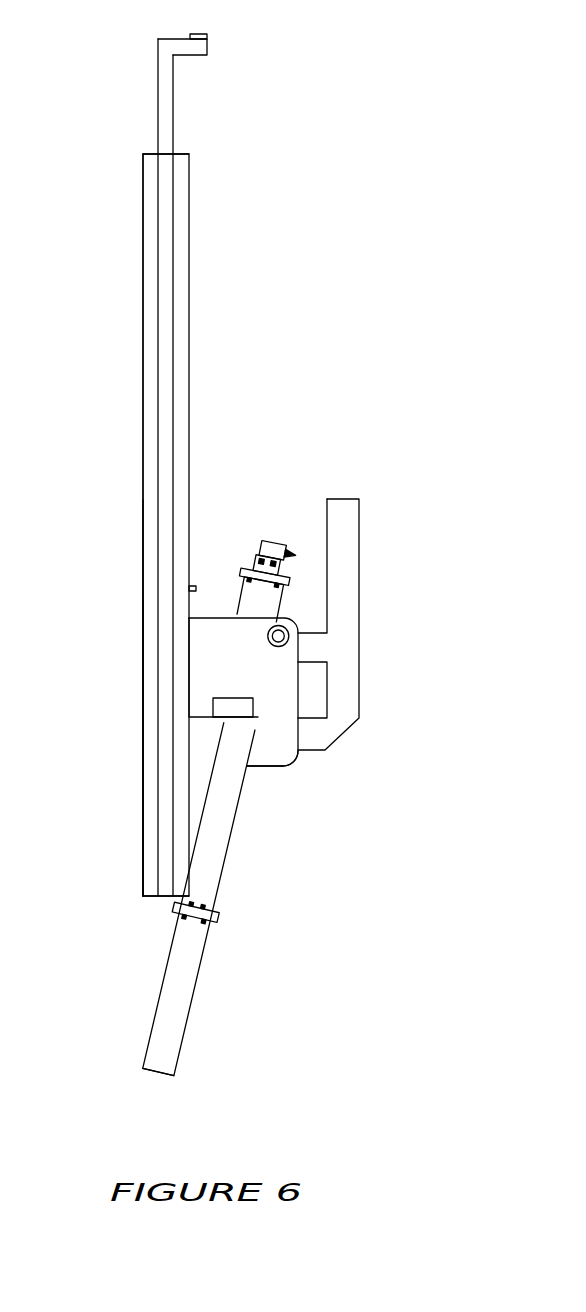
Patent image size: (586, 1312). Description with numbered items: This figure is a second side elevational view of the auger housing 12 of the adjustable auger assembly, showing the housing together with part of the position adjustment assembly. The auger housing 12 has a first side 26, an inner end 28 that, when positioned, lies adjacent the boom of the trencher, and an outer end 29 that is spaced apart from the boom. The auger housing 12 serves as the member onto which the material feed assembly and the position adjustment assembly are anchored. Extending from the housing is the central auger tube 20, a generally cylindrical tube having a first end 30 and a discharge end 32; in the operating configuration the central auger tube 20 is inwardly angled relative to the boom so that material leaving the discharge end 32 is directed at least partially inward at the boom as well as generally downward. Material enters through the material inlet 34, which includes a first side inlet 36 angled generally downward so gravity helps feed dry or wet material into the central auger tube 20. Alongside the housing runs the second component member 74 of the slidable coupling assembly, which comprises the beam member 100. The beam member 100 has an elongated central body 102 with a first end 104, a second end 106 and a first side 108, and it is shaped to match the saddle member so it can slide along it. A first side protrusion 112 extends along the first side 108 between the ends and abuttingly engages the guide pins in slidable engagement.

The first end 104 is at (232, 36).
The elongated central body 102 is at (125, 209).
The second component member 74 is at (125, 277).
The first side protrusion 112 is at (167, 315).
The beam member 100 is at (143, 365).
The first side 108 is at (180, 397).
The auger housing 12 is at (122, 466).
The inner end 28 is at (121, 607).
The first side 26 is at (206, 653).
The outer end 29 is at (381, 630).
The first end 30 is at (276, 543).
The first side inlet 36 is at (241, 708).
The material inlet 34 is at (248, 752).
The second end 106 is at (142, 910).
The central auger tube 20 is at (193, 996).
The discharge end 32 is at (150, 1071).